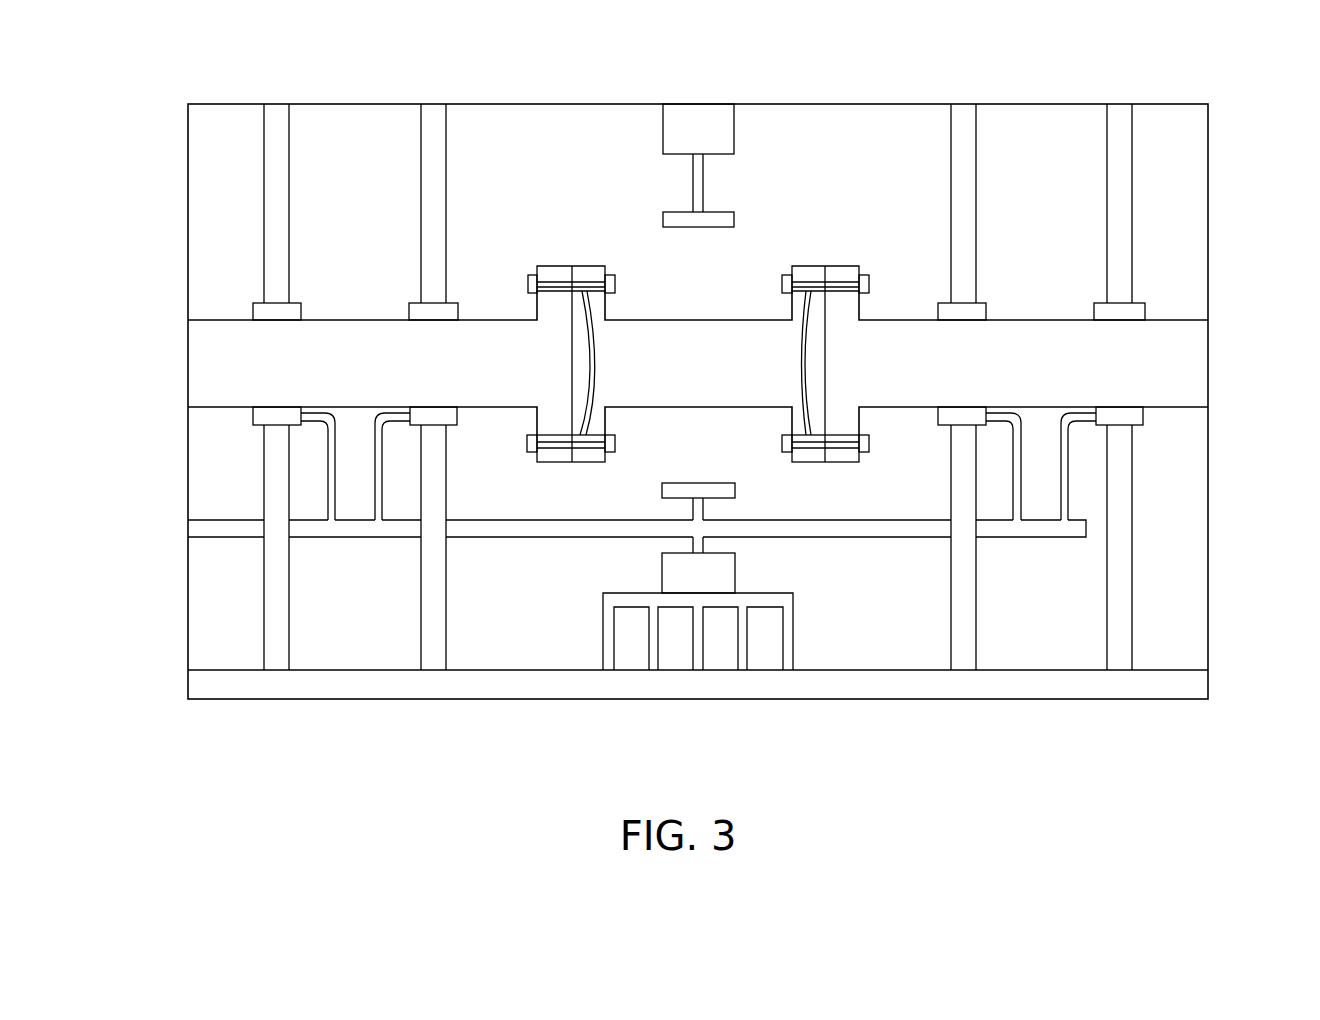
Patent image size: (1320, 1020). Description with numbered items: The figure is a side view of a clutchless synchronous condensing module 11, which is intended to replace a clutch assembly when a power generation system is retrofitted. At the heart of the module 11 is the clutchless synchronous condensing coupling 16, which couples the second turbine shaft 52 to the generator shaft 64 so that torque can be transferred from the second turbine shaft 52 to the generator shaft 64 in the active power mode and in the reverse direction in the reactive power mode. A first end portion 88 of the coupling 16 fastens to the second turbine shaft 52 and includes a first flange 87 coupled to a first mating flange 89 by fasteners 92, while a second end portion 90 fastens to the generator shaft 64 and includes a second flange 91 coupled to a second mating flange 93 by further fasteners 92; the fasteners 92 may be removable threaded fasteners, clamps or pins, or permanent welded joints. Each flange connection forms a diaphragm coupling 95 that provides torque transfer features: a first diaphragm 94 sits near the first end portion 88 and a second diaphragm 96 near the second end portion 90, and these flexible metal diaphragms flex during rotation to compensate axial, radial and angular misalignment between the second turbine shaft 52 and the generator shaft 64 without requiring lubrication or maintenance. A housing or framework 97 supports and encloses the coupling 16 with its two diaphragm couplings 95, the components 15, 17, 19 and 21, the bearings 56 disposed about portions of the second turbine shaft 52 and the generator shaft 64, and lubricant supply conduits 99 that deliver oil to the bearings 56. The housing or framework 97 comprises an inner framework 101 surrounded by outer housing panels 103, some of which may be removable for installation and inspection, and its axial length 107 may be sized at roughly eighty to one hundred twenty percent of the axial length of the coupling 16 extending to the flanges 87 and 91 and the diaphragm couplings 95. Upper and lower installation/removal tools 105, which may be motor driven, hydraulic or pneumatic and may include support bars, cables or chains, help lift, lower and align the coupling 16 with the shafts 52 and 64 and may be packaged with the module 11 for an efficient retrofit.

The clutchless synchronous condensing module 11 is at (1078, 56).
The housing or framework 97 is at (1061, 93).
The outer housing panels 103 is at (237, 104).
The installation/removal tools 105 is at (666, 124).
The bearings 56 is at (417, 311).
The generator shaft 64 is at (1152, 336).
The second turbine shaft 52 is at (494, 388).
The clutchless synchronous condensing coupling 16 is at (698, 297).
The first flange 87 is at (604, 266).
The first mating flange 89 is at (557, 266).
The second flange 91 is at (803, 266).
The second mating flange 93 is at (855, 267).
The fasteners 92 is at (529, 283).
The first end portion 88 is at (572, 328).
The second end portion 90 is at (826, 333).
The first diaphragm 94 is at (590, 368).
The second diaphragm 96 is at (805, 330).
The diaphragm coupling 95 is at (571, 468).
The lubricant supply conduits 99 is at (373, 437).
The inner framework 101 is at (428, 611).
The component 15 is at (627, 652).
The component 17 is at (671, 652).
The component 19 is at (715, 652).
The component 21 is at (760, 652).
The axial length 107 is at (603, 680).